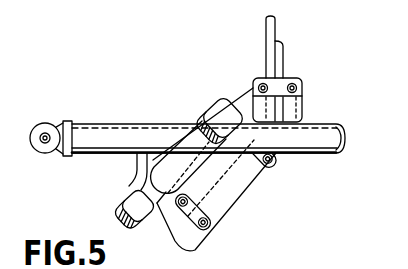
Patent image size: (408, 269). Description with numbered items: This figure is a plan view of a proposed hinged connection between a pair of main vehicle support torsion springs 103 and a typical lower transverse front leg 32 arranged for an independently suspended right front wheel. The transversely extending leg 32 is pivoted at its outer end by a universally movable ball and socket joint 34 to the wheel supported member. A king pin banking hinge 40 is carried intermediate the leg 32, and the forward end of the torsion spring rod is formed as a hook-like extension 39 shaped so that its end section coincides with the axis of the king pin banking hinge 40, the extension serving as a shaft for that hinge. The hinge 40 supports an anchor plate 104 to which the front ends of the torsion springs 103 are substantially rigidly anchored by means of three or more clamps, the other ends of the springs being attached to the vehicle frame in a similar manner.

The transversely extending leg 32 is at (122, 124).
The ball and socket joint 34 is at (50, 125).
The hook-like extension 39 is at (192, 127).
The king pin banking hinge 40 is at (118, 226).
The main vehicle support torsion springs 103 is at (283, 49).
The anchor plate 104 is at (243, 192).